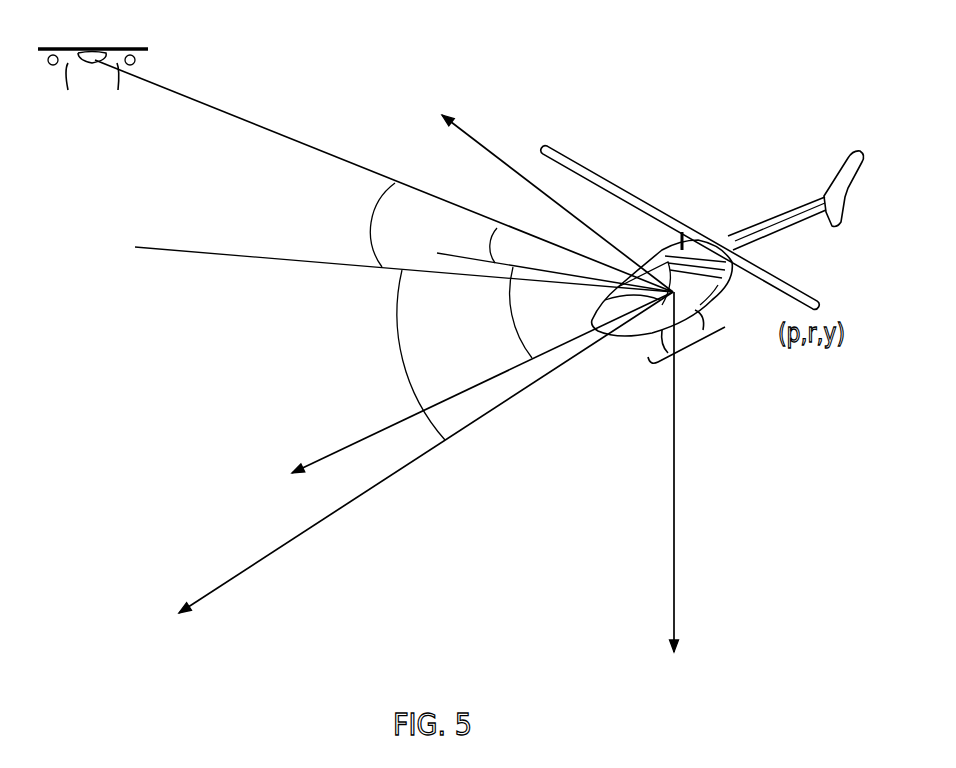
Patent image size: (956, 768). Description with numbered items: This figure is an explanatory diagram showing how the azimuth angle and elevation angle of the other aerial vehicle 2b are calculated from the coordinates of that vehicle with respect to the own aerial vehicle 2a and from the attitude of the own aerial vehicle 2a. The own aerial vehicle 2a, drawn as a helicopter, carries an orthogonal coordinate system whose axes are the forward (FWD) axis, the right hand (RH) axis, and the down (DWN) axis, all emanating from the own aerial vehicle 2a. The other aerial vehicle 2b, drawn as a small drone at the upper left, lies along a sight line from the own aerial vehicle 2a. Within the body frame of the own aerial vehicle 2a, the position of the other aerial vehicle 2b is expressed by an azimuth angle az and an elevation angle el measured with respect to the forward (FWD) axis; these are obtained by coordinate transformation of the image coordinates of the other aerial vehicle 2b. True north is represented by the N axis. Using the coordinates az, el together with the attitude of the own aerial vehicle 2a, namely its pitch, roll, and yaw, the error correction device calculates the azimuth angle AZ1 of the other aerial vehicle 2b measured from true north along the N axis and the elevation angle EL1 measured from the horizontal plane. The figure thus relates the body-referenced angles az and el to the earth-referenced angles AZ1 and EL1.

The own aerial vehicle 2a is at (720, 211).
The other aerial vehicle 2b is at (150, 42).
The right hand axis RH is at (536, 193).
The forward axis FWD is at (450, 393).
The N axis N is at (415, 465).
The down axis DWN is at (681, 494).
The elevation angle from a horizontal plane EL1 is at (358, 225).
The azimuth angle from true north AZ1 is at (395, 355).
The elevation angle el is at (481, 246).
The azimuth angle az is at (506, 312).